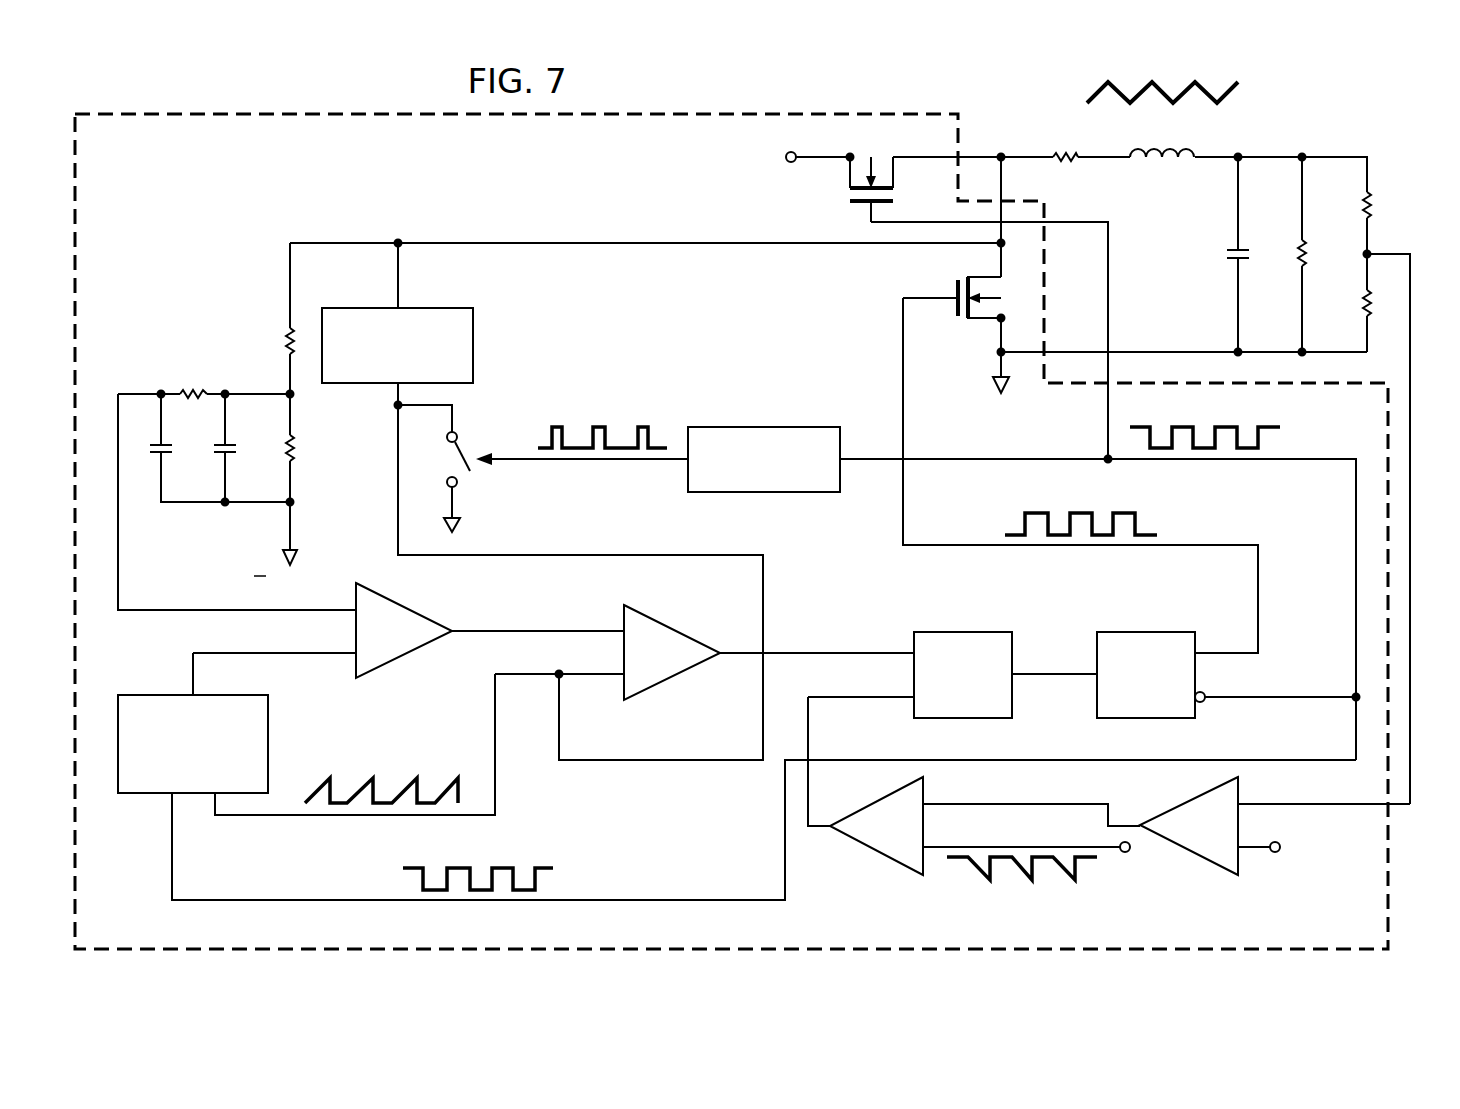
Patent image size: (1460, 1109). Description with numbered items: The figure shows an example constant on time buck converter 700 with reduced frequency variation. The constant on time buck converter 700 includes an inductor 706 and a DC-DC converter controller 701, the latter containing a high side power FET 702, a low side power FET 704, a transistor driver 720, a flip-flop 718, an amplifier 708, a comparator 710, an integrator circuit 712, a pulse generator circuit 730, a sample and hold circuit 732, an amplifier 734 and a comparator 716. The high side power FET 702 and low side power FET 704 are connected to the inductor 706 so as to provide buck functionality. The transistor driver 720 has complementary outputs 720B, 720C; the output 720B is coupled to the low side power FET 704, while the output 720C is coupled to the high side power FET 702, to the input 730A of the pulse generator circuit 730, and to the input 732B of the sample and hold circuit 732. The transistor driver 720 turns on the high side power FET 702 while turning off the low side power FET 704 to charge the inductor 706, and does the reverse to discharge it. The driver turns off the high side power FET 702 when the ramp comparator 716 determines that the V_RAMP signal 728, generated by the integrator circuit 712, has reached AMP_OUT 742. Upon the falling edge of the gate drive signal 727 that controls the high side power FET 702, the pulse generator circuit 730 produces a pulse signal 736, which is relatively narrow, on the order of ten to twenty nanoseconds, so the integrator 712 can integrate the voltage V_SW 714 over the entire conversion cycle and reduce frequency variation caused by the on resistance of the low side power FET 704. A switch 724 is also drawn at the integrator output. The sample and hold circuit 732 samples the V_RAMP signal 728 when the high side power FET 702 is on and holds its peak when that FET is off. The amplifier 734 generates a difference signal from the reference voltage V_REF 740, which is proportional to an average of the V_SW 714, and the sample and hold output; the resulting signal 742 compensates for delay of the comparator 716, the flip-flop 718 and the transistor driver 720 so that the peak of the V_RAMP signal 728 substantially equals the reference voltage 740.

The constant on time buck converter 700 is at (1403, 114).
The DC-DC converter controller 701 is at (309, 114).
The high side power FET 702 is at (854, 206).
The low side power FET 704 is at (957, 288).
The inductor 706 is at (1171, 149).
The amplifier 708 is at (1190, 852).
The comparator 710 is at (878, 856).
The integrator circuit 712 is at (477, 340).
The voltage V_SW 714 is at (624, 243).
The comparator 716 is at (675, 680).
The flip-flop 718 is at (962, 632).
The transistor driver 720 is at (1121, 630).
The output 720B is at (1205, 651).
The output 720C is at (1212, 700).
The switch S1 724 is at (466, 458).
The gate drive signal 727 is at (1297, 696).
The V_RAMP signal 728 is at (397, 470).
The pulse generator circuit 730 is at (739, 425).
The input 730A is at (850, 458).
The sample and hold circuit 732 is at (169, 695).
The input 732B is at (170, 806).
The amplifier 734 is at (404, 659).
The pulse signal 736 is at (590, 461).
The reference voltage V_REF 740 is at (140, 393).
The output signal AMP_OUT 742 is at (472, 630).